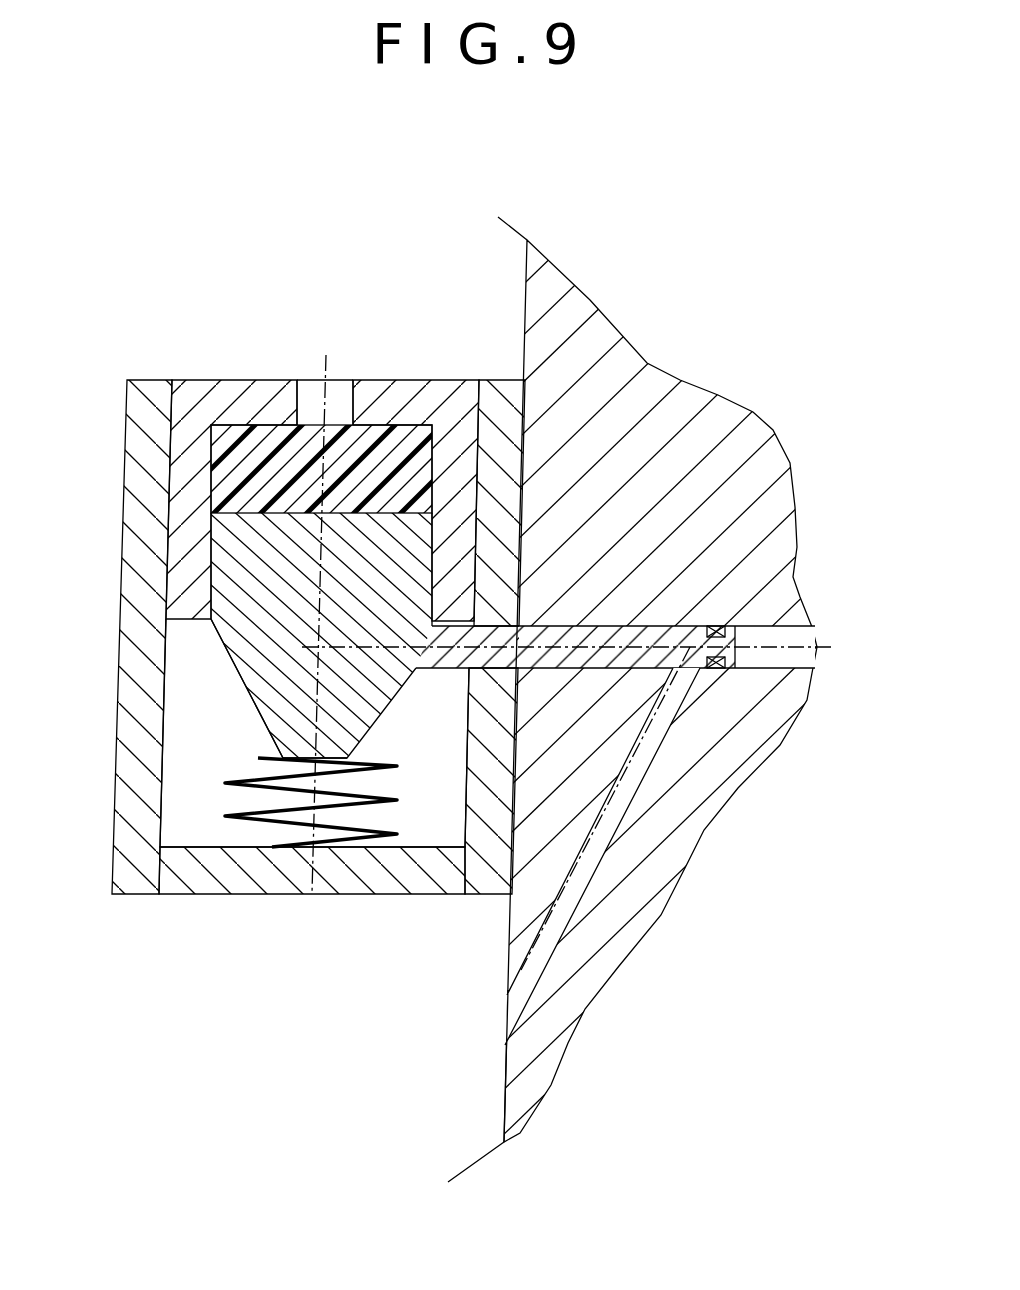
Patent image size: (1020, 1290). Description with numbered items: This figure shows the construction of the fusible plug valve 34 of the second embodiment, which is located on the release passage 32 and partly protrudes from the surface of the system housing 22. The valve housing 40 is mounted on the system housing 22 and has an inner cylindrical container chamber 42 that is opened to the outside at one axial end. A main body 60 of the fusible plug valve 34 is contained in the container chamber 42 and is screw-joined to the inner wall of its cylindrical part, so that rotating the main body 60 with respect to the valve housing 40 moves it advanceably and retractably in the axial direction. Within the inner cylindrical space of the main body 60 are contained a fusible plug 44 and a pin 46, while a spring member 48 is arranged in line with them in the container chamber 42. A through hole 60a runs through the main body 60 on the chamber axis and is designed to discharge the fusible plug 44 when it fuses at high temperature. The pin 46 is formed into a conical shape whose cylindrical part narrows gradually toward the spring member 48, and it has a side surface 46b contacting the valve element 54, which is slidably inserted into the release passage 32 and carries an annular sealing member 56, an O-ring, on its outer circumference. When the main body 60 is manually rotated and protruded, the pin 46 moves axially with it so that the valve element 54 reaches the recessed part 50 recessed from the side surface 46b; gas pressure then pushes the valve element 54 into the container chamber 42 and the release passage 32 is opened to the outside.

The system housing 22 is at (585, 305).
The release passage 32 is at (795, 635).
The fusible plug valve 34 is at (147, 967).
The valve housing 40 is at (298, 895).
The container chamber 42 is at (197, 707).
The fusible plug 44 is at (227, 478).
The pin 46 is at (227, 578).
The side surface 46b is at (223, 650).
The spring member 48 is at (243, 787).
The recessed part 50 is at (273, 735).
The valve element 54 is at (610, 627).
The sealing member 56 is at (723, 628).
The main body 60 is at (212, 388).
The through hole 60a is at (317, 392).